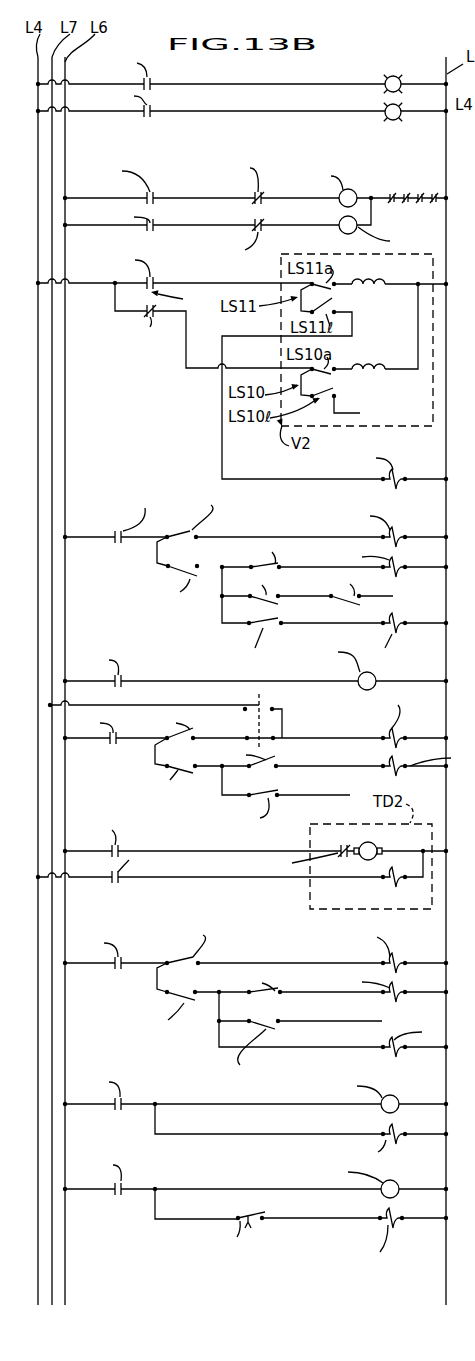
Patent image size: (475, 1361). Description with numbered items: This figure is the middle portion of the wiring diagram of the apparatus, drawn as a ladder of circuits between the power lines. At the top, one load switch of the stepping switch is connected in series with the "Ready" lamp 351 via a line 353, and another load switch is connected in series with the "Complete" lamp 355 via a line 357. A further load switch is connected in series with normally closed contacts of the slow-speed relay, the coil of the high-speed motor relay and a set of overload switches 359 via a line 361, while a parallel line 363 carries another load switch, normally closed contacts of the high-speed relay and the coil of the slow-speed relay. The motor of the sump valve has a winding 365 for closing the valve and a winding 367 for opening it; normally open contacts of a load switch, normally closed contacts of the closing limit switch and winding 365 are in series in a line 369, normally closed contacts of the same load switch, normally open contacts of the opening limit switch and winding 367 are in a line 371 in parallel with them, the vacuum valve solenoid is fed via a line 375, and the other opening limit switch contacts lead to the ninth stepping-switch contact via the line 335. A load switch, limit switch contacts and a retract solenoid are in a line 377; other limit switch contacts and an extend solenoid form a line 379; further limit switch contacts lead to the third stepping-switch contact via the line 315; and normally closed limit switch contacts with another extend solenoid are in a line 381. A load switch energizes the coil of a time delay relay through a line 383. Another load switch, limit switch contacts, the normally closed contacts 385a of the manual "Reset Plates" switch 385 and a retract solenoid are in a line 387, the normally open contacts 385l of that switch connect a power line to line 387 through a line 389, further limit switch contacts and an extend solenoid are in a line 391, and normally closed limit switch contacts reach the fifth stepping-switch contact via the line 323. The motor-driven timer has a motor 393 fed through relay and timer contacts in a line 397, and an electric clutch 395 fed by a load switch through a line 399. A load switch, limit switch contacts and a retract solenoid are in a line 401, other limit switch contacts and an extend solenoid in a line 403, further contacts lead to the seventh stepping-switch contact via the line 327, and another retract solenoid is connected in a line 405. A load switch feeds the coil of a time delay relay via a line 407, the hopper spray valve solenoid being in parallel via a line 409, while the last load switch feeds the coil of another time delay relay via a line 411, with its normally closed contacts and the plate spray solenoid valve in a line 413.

The line 315 is at (393, 596).
The line 323 is at (343, 792).
The line 327 is at (305, 1022).
The line 335 is at (360, 413).
The "Ready" lamp 351 is at (393, 73).
The line 353 is at (301, 83).
The "Complete" lamp 355 is at (387, 122).
The line 357 is at (262, 112).
The overload switches 359 is at (434, 192).
The line 361 is at (192, 200).
The line 363 is at (197, 226).
The winding 365 is at (388, 268).
The winding 367 is at (379, 372).
The line 369 is at (100, 284).
The line 371 is at (186, 370).
The line 375 is at (219, 456).
The line 377 is at (91, 539).
The line 379 is at (157, 555).
The line 381 is at (222, 623).
The line 383 is at (215, 680).
The "Reset Plates" switch 385 is at (261, 722).
The time delay contact 385l is at (237, 702).
The normally closed contacts 385a is at (276, 743).
The line 387 is at (91, 740).
The line 389 is at (120, 705).
The line 391 is at (430, 770).
The motor 393 is at (378, 846).
The electric clutch 395 is at (388, 880).
The line 397 is at (193, 849).
The line 399 is at (171, 878).
The line 401 is at (288, 962).
The line 403 is at (157, 980).
The line 405 is at (219, 1046).
The line 407 is at (192, 1103).
The line 409 is at (258, 1135).
The line 411 is at (218, 1188).
The line 413 is at (155, 1226).